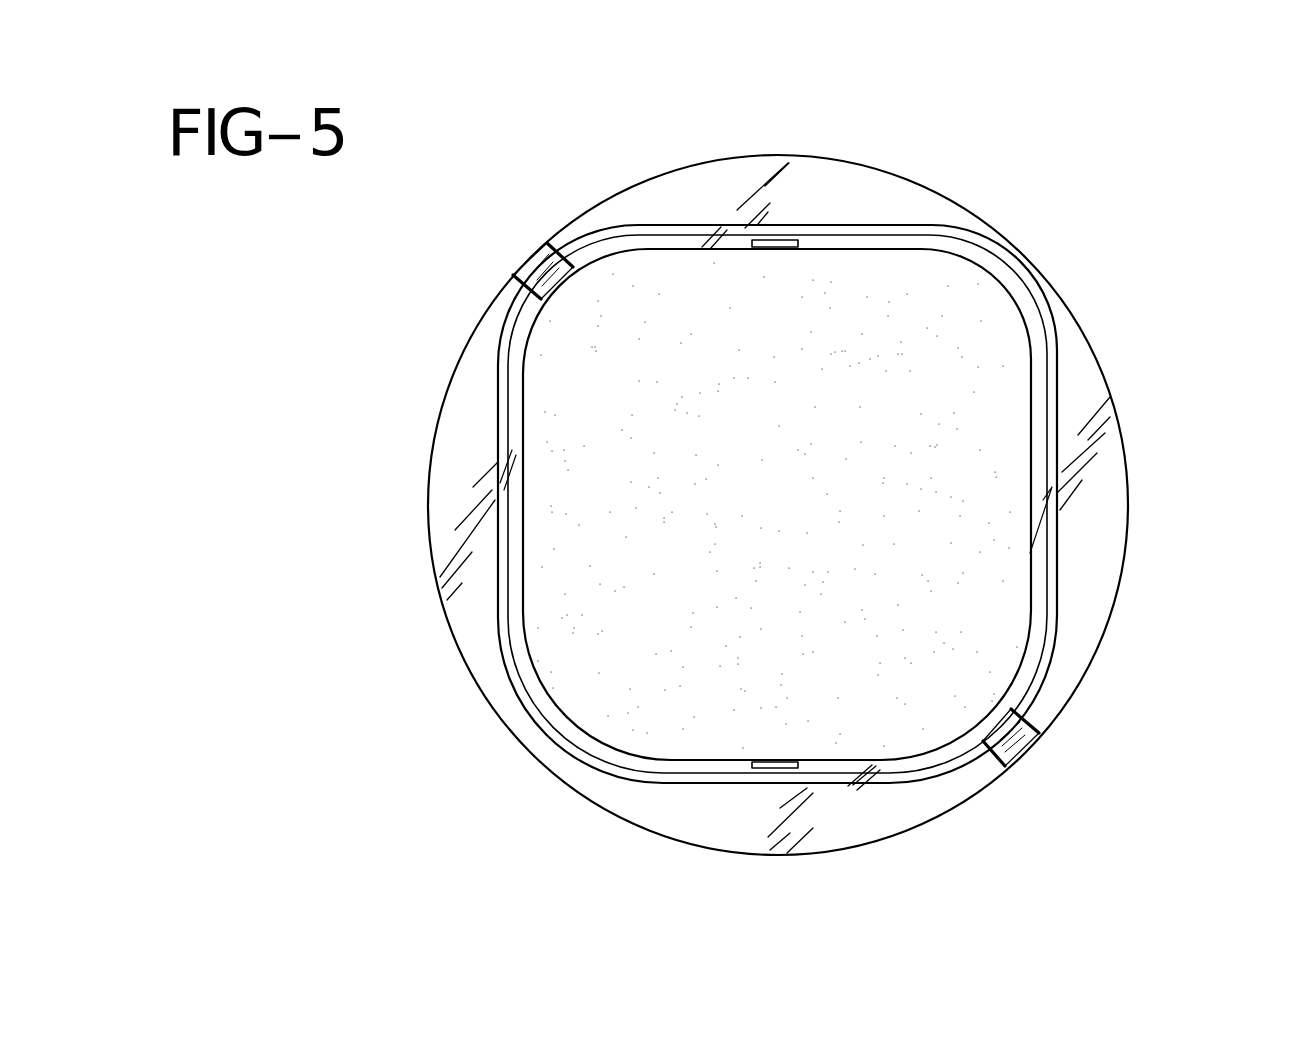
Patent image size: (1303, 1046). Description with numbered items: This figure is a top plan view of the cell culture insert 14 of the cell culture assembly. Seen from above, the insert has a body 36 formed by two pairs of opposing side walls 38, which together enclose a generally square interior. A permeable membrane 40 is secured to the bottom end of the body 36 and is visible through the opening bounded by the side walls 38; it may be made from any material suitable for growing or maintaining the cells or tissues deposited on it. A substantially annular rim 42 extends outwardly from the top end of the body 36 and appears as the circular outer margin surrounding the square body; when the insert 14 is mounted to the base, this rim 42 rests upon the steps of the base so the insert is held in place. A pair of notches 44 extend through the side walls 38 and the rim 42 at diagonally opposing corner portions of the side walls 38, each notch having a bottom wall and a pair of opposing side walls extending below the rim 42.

The cell culture insert 14 is at (1023, 267).
The body 36 is at (1106, 405).
The side walls 38 is at (898, 246).
The permeable membrane 40 is at (968, 628).
The annular rim 42 is at (1093, 522).
The notches 44 is at (540, 260).